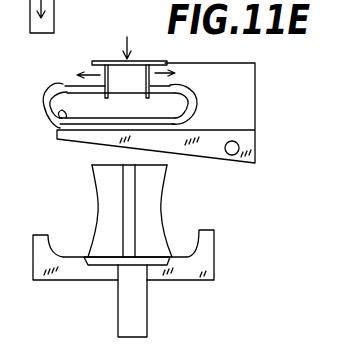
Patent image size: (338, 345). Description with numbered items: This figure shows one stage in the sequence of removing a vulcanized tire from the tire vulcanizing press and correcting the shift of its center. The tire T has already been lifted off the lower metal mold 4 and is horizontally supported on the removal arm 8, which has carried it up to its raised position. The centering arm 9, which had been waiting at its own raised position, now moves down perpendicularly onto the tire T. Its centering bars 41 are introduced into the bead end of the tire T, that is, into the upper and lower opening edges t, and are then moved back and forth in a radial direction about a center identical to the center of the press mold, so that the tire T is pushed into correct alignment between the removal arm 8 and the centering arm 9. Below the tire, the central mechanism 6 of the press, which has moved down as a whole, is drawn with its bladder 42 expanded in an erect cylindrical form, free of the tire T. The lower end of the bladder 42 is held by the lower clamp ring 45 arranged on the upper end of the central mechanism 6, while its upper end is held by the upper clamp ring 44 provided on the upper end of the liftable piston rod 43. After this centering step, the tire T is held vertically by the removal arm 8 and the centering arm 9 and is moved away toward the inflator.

The lower metal mold 4 is at (207, 257).
The central mechanism 6 is at (138, 310).
The removal arm 8 is at (284, 150).
The centering arm 9 is at (144, 60).
The centering bar 41 is at (193, 95).
The bladder 42 is at (158, 183).
The piston rod 43 is at (135, 228).
The upper clamp ring 44 is at (102, 182).
The lower clamp ring 45 is at (103, 260).
The tire T is at (45, 94).
The opening edge t is at (63, 113).